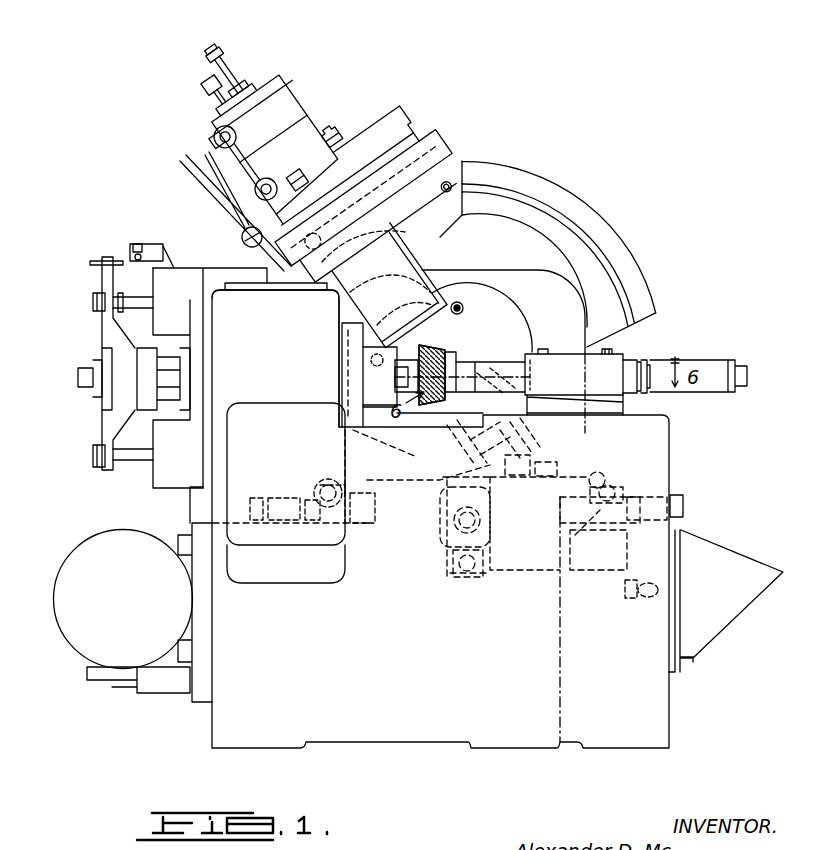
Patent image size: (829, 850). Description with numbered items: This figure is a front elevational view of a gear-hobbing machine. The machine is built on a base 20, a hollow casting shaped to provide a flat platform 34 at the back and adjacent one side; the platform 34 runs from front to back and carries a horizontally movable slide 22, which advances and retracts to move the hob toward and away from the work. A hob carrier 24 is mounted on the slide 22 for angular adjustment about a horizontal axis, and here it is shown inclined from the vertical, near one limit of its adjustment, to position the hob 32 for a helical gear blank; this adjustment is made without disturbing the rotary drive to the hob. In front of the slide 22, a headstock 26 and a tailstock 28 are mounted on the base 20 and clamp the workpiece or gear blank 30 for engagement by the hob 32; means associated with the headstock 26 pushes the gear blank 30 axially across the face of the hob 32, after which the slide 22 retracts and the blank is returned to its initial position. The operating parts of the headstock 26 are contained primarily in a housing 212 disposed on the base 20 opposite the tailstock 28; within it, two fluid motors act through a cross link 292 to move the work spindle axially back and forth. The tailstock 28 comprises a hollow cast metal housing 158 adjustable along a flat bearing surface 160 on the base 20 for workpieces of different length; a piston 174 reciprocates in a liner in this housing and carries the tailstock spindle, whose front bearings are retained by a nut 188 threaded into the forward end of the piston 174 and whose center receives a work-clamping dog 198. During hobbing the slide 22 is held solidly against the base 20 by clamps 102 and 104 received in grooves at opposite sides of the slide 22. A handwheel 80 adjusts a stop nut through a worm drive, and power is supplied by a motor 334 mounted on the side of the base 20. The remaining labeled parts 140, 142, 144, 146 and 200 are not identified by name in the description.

The base 20 is at (652, 710).
The slide 22 is at (557, 295).
The hob carrier 24 is at (339, 116).
The headstock 26 is at (225, 262).
The tailstock 28 is at (610, 362).
The workpiece 30 is at (444, 337).
The hob 32 is at (454, 362).
The platform 34 is at (377, 480).
The handwheel 80 is at (624, 585).
The clamp 102 is at (322, 482).
The clamp 104 is at (620, 482).
The sector plate 140 is at (467, 163).
The outer arcuate guide 142 is at (590, 227).
The middle arcuate guide 144 is at (543, 210).
The inner arcuate guide 146 is at (467, 183).
The housing 158 is at (603, 347).
The bearing surface 160 is at (650, 418).
The piston 174 is at (528, 353).
The nut 188 is at (216, 48).
The work-clamping dog 198 is at (456, 367).
The bar 200 is at (713, 362).
The housing 212 is at (288, 343).
The cross link 292 is at (108, 430).
The motor 334 is at (105, 537).